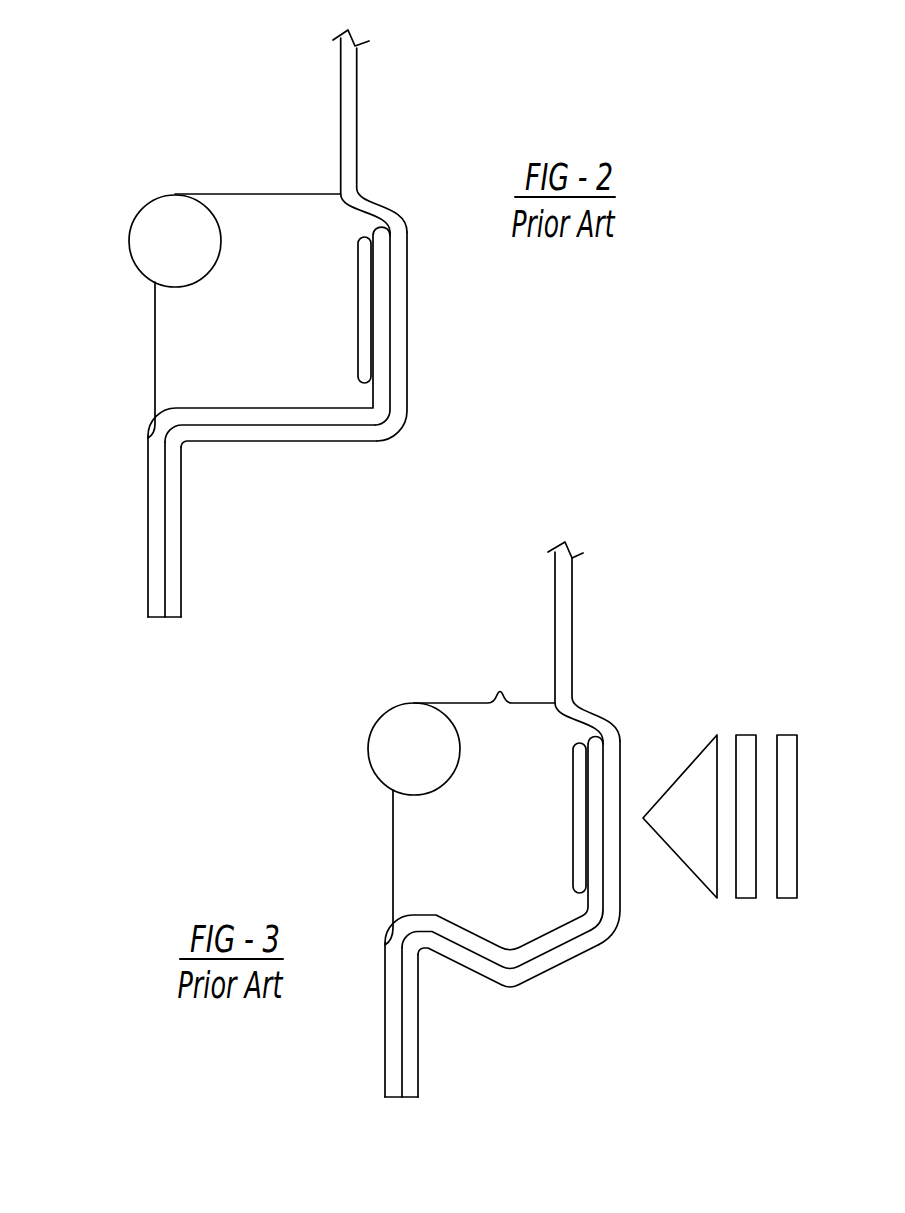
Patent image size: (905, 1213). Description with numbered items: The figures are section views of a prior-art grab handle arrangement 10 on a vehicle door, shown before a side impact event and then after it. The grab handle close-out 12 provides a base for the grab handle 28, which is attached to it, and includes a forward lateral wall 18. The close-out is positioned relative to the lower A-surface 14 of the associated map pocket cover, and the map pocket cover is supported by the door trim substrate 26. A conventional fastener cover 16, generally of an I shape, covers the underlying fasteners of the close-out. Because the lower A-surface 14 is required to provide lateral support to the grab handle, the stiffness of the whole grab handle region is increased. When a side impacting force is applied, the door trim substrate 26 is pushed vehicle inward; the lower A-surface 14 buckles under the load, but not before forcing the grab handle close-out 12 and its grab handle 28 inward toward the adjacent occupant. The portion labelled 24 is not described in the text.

In FIG. 2, the grab handle arrangement 10 is at (150, 125).
In FIG. 3, the grab handle arrangement 10 is at (382, 684).
In FIG. 2, the grab handle close-out 12 is at (260, 223).
In FIG. 3, the grab handle close-out 12 is at (475, 727).
In FIG. 2, the lower A-surface 14 is at (277, 415).
In FIG. 3, the lower A-surface 14 is at (533, 948).
In FIG. 2, the fastener cover 16 is at (362, 315).
In FIG. 3, the fastener cover 16 is at (577, 775).
In FIG. 2, the forward lateral wall 18 is at (190, 364).
In FIG. 3, the forward lateral wall 18 is at (427, 853).
In FIG. 2, the channel wall portion 24 is at (377, 353).
In FIG. 3, the channel wall portion 24 is at (605, 905).
In FIG. 2, the door trim substrate 26 is at (350, 98).
In FIG. 3, the door trim substrate 26 is at (560, 625).
In FIG. 2, the grab handle 28 is at (160, 242).
In FIG. 3, the grab handle 28 is at (387, 760).